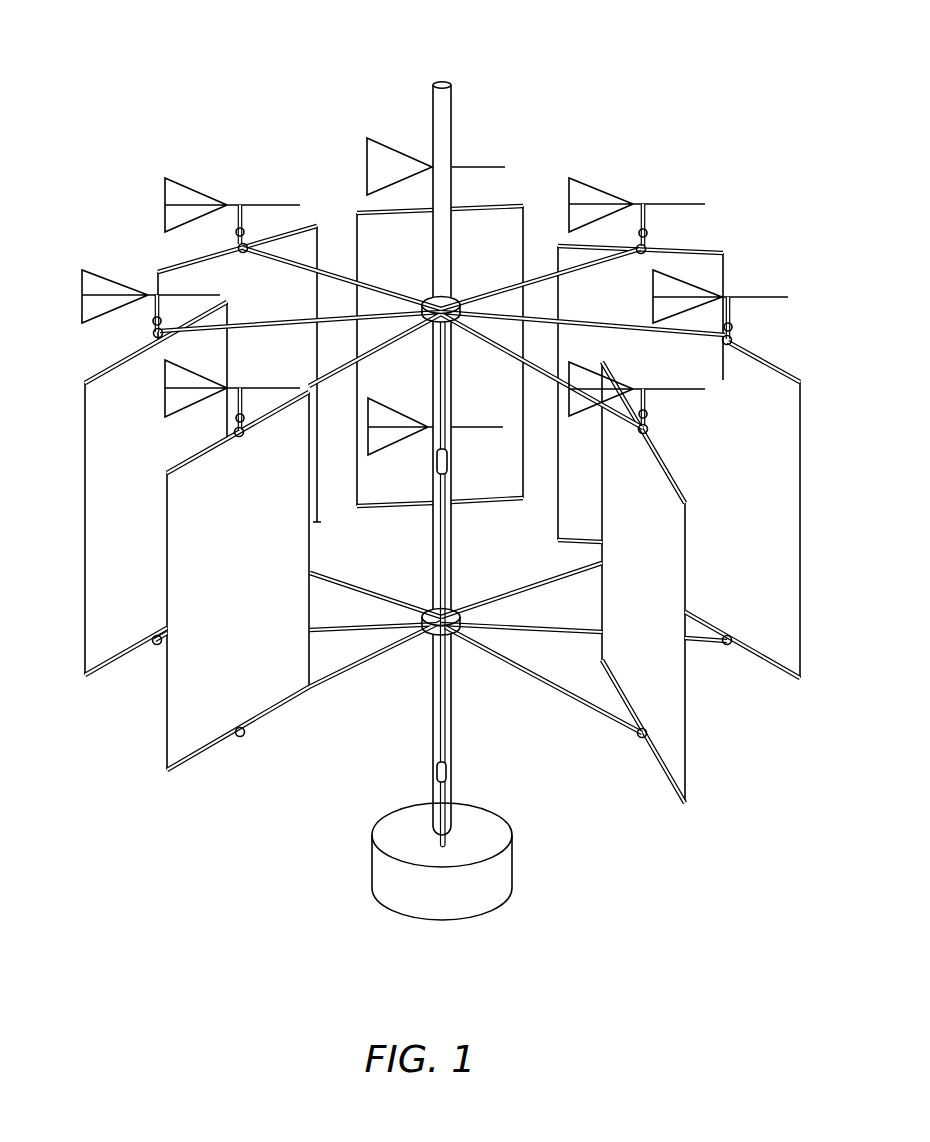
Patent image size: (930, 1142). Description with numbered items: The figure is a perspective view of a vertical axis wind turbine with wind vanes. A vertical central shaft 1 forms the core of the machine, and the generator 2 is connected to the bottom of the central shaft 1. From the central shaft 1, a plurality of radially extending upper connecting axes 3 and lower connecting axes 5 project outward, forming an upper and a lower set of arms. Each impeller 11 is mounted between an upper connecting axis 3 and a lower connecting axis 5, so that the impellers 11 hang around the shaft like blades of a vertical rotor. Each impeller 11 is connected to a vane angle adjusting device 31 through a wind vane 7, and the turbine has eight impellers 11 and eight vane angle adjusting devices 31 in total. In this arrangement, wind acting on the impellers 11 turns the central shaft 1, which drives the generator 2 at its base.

The central shaft 1 is at (441, 80).
The generator 2 is at (452, 907).
The upper connecting axis 3 is at (323, 268).
The lower connecting axis 5 is at (341, 678).
The wind vane 7 is at (178, 192).
The impeller 11 is at (172, 710).
The vane angle adjusting device 31 is at (237, 232).